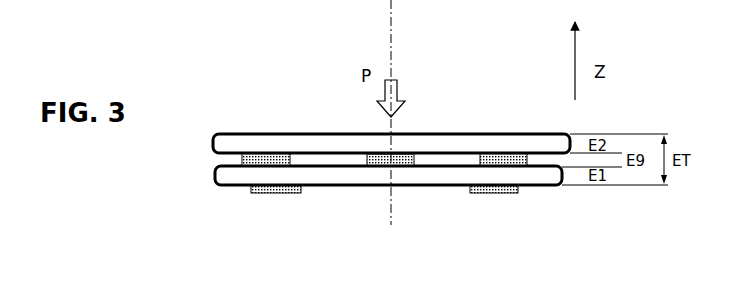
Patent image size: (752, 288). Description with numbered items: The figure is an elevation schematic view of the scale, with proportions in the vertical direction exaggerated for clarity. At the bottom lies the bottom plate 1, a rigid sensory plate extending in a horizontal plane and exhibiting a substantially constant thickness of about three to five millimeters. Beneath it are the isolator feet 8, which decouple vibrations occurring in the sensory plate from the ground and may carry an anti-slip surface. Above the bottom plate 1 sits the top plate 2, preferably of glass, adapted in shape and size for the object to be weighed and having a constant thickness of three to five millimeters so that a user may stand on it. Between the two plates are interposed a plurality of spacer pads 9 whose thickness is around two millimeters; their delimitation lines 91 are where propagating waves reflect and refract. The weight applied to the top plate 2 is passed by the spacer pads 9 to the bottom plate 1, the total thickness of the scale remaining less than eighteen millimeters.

The bottom plate 1 is at (363, 158).
The top plate 2 is at (429, 131).
The isolator feet 8 is at (278, 194).
The spacer pads 9 is at (270, 157).
The delimitation lines of the spacer pads 91 is at (368, 158).